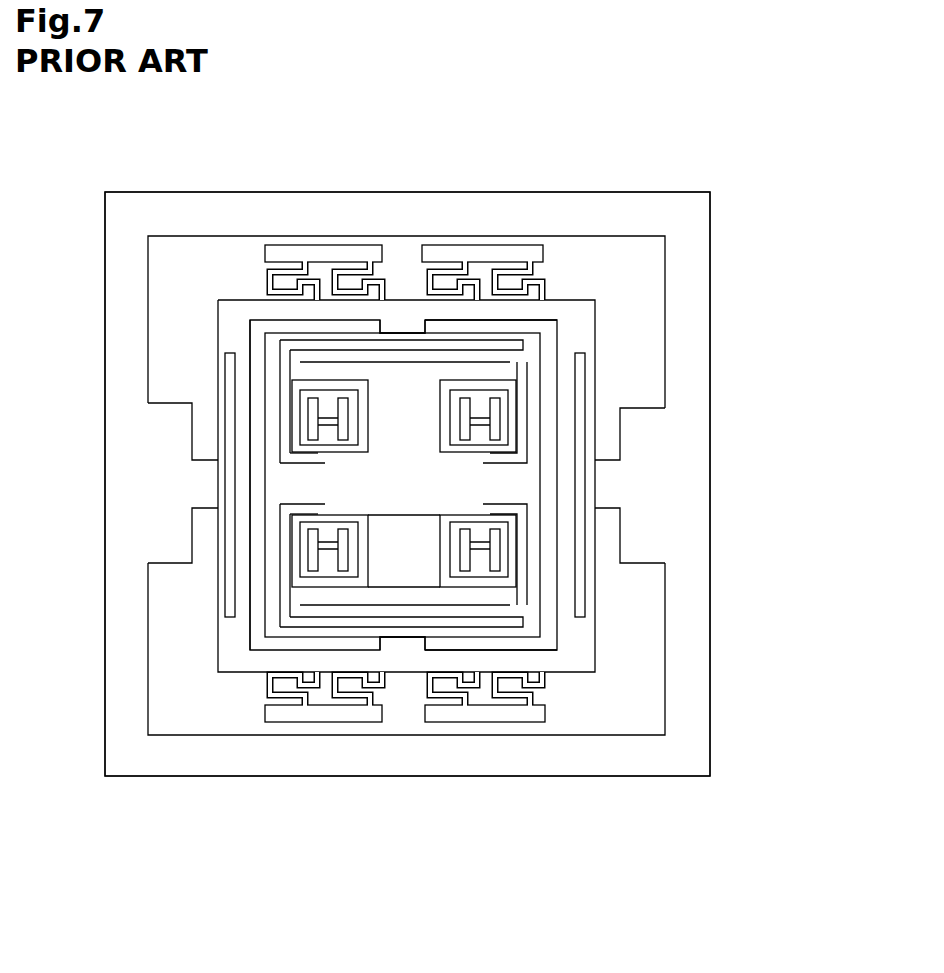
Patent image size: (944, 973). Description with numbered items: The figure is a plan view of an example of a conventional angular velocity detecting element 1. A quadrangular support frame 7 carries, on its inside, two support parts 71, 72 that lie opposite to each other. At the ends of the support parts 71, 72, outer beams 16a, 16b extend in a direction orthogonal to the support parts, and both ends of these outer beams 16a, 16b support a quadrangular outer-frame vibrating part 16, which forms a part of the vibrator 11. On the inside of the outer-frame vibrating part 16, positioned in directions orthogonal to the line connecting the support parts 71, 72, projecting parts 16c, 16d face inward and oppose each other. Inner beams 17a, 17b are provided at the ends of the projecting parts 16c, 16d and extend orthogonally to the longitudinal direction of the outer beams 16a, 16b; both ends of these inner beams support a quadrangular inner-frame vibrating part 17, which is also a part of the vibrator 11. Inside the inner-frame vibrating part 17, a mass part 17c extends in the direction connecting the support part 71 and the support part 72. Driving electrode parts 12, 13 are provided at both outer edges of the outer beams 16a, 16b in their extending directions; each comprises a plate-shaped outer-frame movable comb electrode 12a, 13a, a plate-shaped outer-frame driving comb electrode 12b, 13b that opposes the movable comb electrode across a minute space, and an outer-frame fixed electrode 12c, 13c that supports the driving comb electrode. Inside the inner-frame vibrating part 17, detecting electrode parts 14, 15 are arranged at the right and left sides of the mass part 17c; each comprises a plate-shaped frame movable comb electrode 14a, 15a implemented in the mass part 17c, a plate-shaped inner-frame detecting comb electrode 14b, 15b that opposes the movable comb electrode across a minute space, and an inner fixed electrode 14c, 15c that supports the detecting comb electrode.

The angular velocity detecting element 1 is at (599, 189).
The support frame 7 is at (674, 776).
The vibrator 11 is at (600, 363).
The driving electrode part 12 is at (253, 285).
The outer-frame movable comb electrode 12a is at (503, 262).
The outer-frame driving comb electrode 12b is at (322, 262).
The outer-frame fixed electrode 12c is at (272, 245).
The driving electrode part 13 is at (260, 696).
The outer-frame movable comb electrode 13a is at (325, 723).
The outer-frame driving comb electrode 13b is at (482, 703).
The outer-frame fixed electrode 13c is at (295, 723).
The detecting electrode part 14 is at (430, 375).
The frame movable comb electrode 14a is at (508, 455).
The inner-frame detecting comb electrode 14b is at (277, 410).
The inner fixed electrode 14c is at (383, 397).
The detecting electrode part 15 is at (294, 567).
The frame movable comb electrode 15a is at (478, 513).
The inner-frame detecting comb electrode 15b is at (510, 567).
The inner fixed electrode 15c is at (393, 577).
The outer-frame vibrating part 16 is at (227, 315).
The outer beam 16a is at (622, 557).
The outer beam 16b is at (215, 427).
The projecting part 16c is at (405, 332).
The projecting part 16d is at (385, 652).
The inner-frame vibrating part 17 is at (537, 607).
The inner beam 17a is at (482, 318).
The inner beam 17b is at (558, 673).
The mass part 17c is at (363, 467).
The support part 71 is at (625, 445).
The support part 72 is at (215, 510).